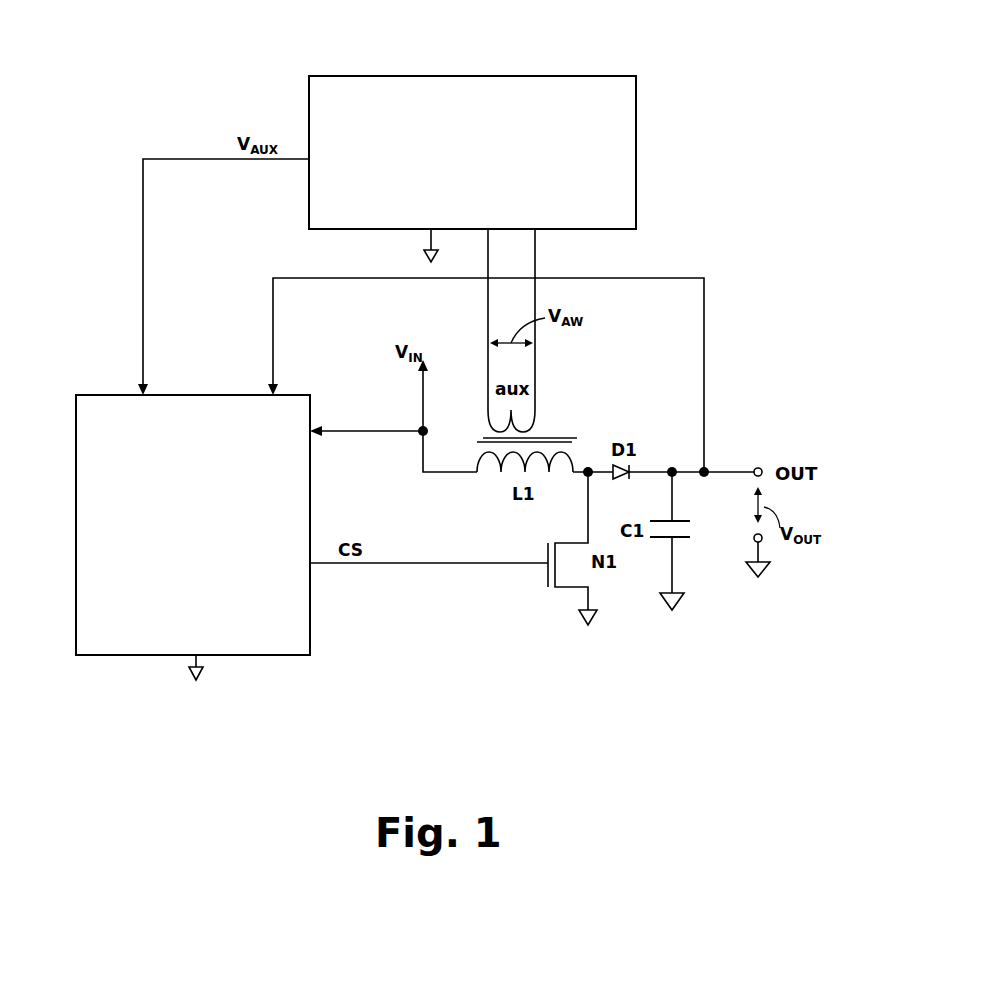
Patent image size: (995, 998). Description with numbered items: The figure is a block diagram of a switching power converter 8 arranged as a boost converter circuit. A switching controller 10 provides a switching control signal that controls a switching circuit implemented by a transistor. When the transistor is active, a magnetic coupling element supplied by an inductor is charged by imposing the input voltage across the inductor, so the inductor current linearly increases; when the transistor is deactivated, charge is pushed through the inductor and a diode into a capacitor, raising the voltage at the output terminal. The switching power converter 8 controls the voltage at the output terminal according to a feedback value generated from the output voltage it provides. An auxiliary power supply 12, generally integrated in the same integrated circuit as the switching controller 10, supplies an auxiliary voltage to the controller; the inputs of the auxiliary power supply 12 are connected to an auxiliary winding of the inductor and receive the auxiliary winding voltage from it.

The switching power converter 8 is at (722, 73).
The switching controller 10 is at (193, 537).
The auxiliary power supply 12 is at (472, 169).